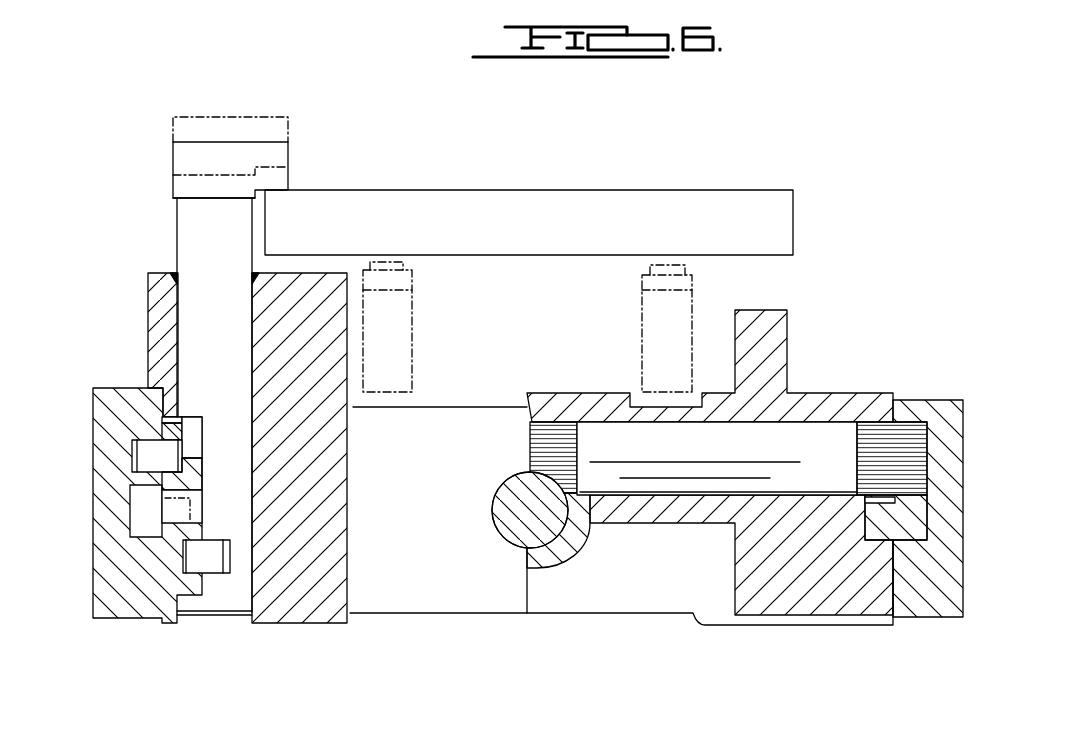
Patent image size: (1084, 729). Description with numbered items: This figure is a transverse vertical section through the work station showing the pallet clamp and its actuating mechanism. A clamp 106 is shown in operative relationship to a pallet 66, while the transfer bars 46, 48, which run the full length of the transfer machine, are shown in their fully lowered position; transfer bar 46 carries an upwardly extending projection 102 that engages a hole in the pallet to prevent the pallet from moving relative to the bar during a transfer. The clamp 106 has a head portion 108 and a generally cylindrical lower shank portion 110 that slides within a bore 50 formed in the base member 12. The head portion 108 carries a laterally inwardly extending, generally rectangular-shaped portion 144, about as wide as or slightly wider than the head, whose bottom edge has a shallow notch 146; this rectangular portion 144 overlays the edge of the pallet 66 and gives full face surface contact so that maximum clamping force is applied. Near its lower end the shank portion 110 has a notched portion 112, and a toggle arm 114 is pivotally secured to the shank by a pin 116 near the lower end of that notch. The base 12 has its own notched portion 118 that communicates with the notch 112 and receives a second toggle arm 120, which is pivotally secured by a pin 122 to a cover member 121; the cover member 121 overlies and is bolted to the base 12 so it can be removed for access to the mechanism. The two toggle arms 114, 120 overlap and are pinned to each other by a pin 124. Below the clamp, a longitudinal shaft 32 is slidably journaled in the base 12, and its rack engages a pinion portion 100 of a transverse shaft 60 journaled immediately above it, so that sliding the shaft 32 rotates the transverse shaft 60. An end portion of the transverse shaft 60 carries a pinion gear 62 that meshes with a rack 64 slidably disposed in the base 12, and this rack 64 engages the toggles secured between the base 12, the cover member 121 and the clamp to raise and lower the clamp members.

The base member 12 is at (652, 615).
The longitudinal shaft 32 is at (503, 476).
The transfer bar 46 is at (692, 317).
The transfer bar 48 is at (412, 302).
The bore 50 is at (187, 296).
The transverse shaft 60 is at (787, 433).
The pinion gear 62 is at (870, 428).
The rack 64 is at (143, 525).
The pallet 66 is at (765, 222).
The pinion portion 100 is at (570, 413).
The upwardly extending projection 102 is at (549, 485).
The clamp 106 is at (166, 157).
The head portion 108 is at (190, 184).
The lower shank portion 110 is at (195, 218).
The notched portion 112 is at (193, 425).
The toggle arm 114 is at (198, 478).
The pin 116 is at (215, 547).
The notched portion 118 is at (160, 415).
The second toggle arm 120 is at (180, 420).
The cover member 121 is at (133, 612).
The pin 122 is at (167, 453).
The pin 124 is at (202, 507).
The rectangular-shaped portion 144 is at (270, 140).
The shallow notch 146 is at (275, 193).